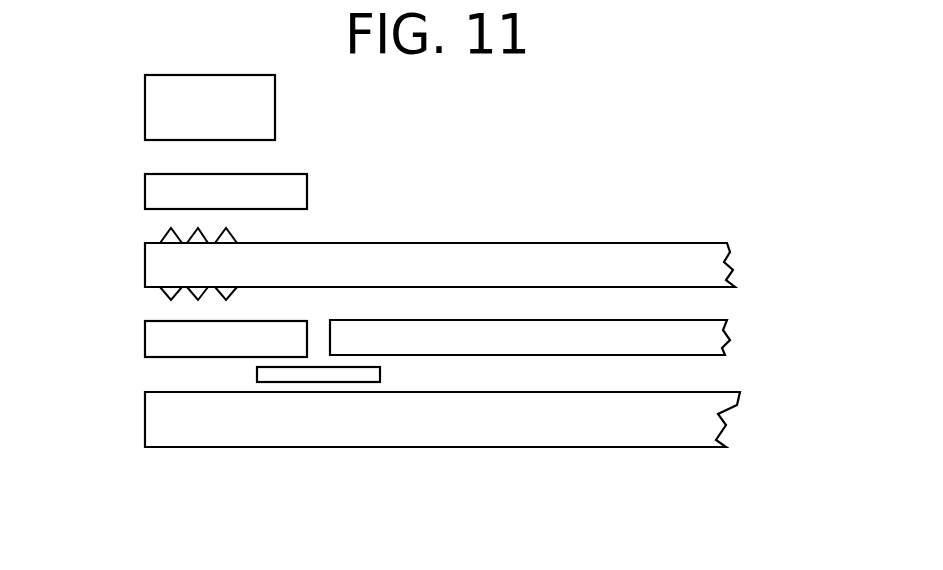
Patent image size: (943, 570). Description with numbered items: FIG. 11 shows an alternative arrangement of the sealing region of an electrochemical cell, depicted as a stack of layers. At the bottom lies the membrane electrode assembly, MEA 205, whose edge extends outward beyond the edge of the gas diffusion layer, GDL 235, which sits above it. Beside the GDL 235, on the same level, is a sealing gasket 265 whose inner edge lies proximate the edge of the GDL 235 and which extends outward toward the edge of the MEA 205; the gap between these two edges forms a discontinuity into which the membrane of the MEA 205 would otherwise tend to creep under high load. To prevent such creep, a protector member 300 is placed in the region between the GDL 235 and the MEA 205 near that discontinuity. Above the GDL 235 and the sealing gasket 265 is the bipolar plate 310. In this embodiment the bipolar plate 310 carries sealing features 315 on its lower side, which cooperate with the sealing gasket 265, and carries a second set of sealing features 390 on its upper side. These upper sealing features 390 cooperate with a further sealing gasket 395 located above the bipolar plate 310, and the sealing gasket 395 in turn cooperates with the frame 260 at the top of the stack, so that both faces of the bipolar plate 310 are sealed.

The frame 260 is at (225, 123).
The sealing gasket 395 is at (160, 194).
The bipolar plate 310 is at (700, 266).
The sealing features 390 is at (160, 240).
The sealing features 315 is at (160, 288).
The sealing gasket 265 is at (160, 342).
The gas diffusion layer 235 is at (708, 340).
The protector member 300 is at (380, 372).
The membrane electrode assembly 205 is at (708, 422).